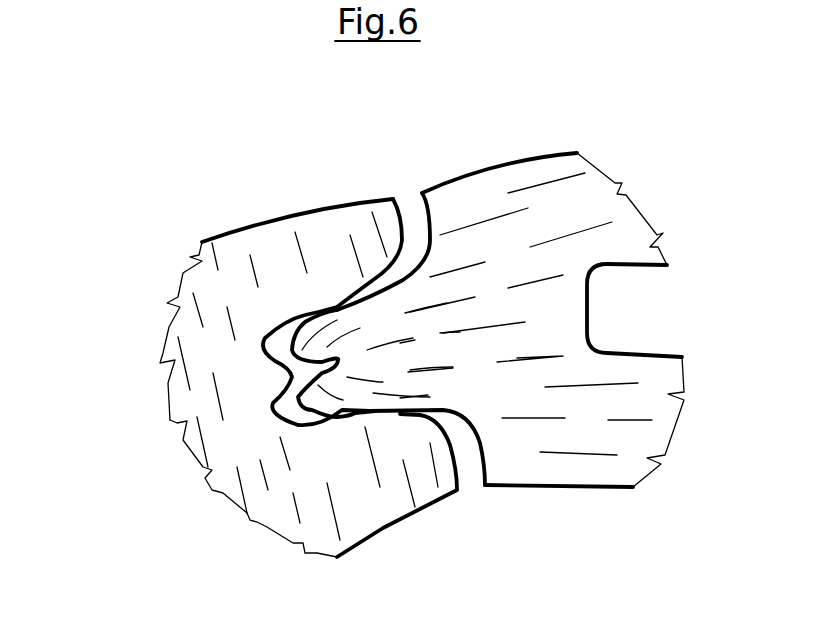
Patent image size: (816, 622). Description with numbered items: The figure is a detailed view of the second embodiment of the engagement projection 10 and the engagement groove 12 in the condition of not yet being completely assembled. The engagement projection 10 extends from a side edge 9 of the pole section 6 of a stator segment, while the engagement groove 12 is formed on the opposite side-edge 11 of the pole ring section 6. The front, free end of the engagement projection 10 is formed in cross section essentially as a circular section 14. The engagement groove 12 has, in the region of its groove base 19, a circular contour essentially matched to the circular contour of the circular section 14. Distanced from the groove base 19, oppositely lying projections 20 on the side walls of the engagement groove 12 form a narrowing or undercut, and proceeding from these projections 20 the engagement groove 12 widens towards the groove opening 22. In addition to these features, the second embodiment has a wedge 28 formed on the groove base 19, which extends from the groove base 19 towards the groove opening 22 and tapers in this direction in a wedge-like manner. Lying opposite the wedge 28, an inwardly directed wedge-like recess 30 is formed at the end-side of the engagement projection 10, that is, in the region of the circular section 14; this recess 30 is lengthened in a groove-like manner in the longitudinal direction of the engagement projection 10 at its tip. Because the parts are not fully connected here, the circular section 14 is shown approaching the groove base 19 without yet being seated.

The pole section 6 is at (621, 236).
The side edge 9 is at (433, 213).
The engagement projection 10 is at (475, 372).
The opposite side-edge 11 is at (397, 210).
The engagement groove 12 is at (287, 327).
The circular section 14 is at (297, 340).
The groove base 19 is at (273, 420).
The projections 20 is at (327, 322).
The groove opening 22 is at (423, 417).
The wedge 28 is at (273, 373).
The wedge-like recess 30 is at (335, 422).